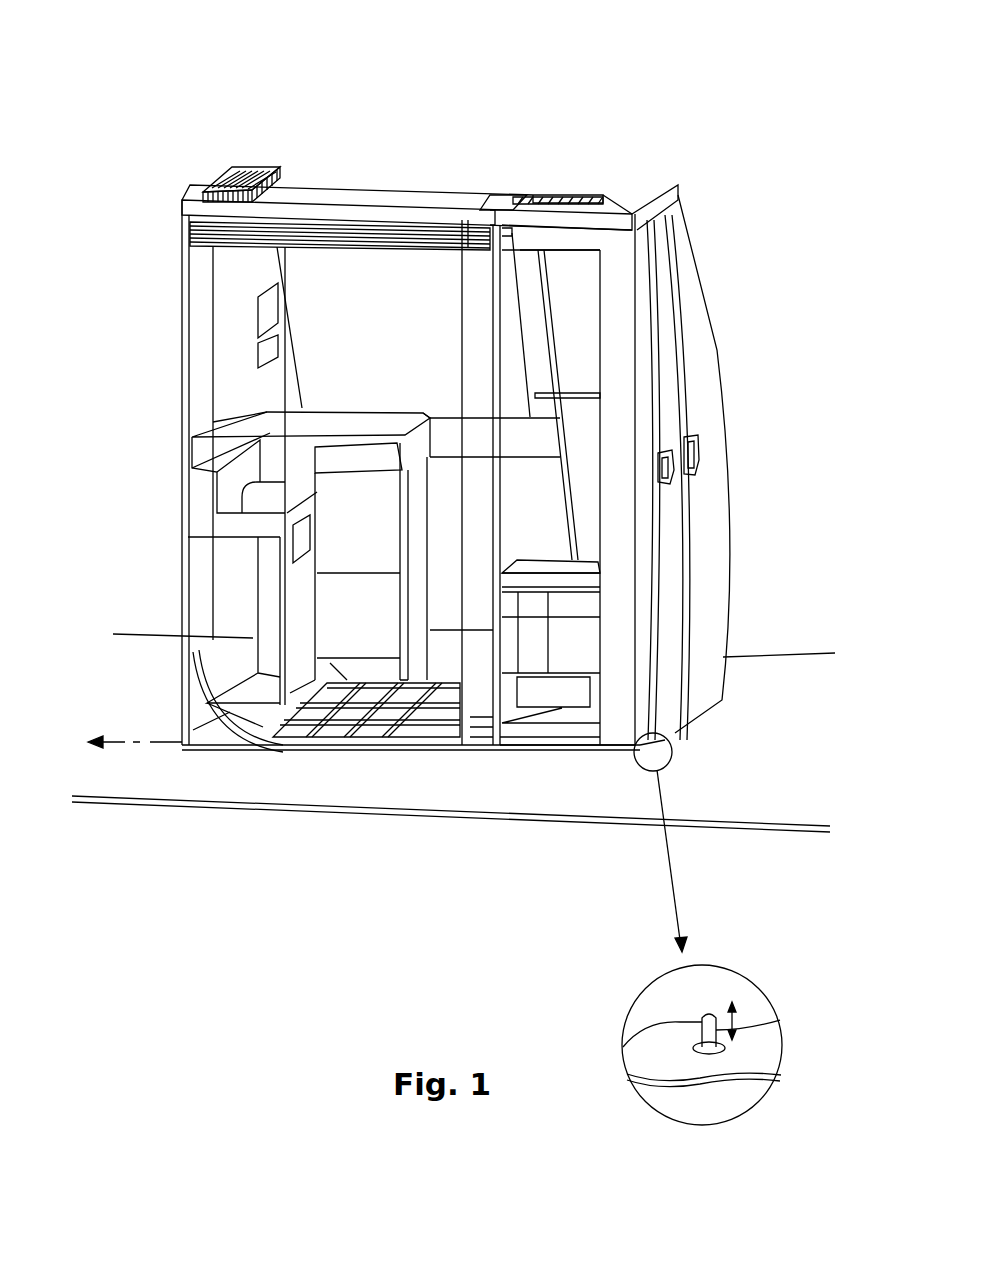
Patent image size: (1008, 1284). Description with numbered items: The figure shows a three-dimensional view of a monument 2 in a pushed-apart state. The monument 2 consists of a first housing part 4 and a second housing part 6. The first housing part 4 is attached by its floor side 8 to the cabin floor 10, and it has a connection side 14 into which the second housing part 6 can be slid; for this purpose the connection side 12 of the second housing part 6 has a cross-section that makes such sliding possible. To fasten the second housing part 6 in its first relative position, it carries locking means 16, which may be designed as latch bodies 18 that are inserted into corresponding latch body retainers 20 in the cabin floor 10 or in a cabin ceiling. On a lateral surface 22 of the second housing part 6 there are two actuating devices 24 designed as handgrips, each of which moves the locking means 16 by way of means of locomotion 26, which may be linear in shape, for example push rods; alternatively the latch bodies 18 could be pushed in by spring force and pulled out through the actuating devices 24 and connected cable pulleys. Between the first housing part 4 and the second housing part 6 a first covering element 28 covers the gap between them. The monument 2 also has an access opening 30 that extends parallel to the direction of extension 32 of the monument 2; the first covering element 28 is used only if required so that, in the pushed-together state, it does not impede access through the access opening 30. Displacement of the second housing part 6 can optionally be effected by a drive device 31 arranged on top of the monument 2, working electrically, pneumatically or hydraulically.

The monument 2 is at (432, 96).
The first housing part 4 is at (165, 310).
The second housing part 6 is at (750, 317).
The floor side 8 is at (236, 768).
The cabin floor 10 is at (148, 777).
The connection side 12 is at (470, 222).
The connection side 14 is at (510, 777).
The locking means 16 is at (703, 191).
The latch body 18 is at (703, 1013).
The latch body retainer 20 is at (727, 1047).
The lateral surface 22 is at (712, 540).
The actuating device 24 is at (690, 455).
The means of locomotion 26 is at (683, 270).
The first covering element 28 is at (555, 262).
The access opening 30 is at (340, 270).
The drive device 31 is at (242, 170).
The direction of extension 32 is at (120, 737).